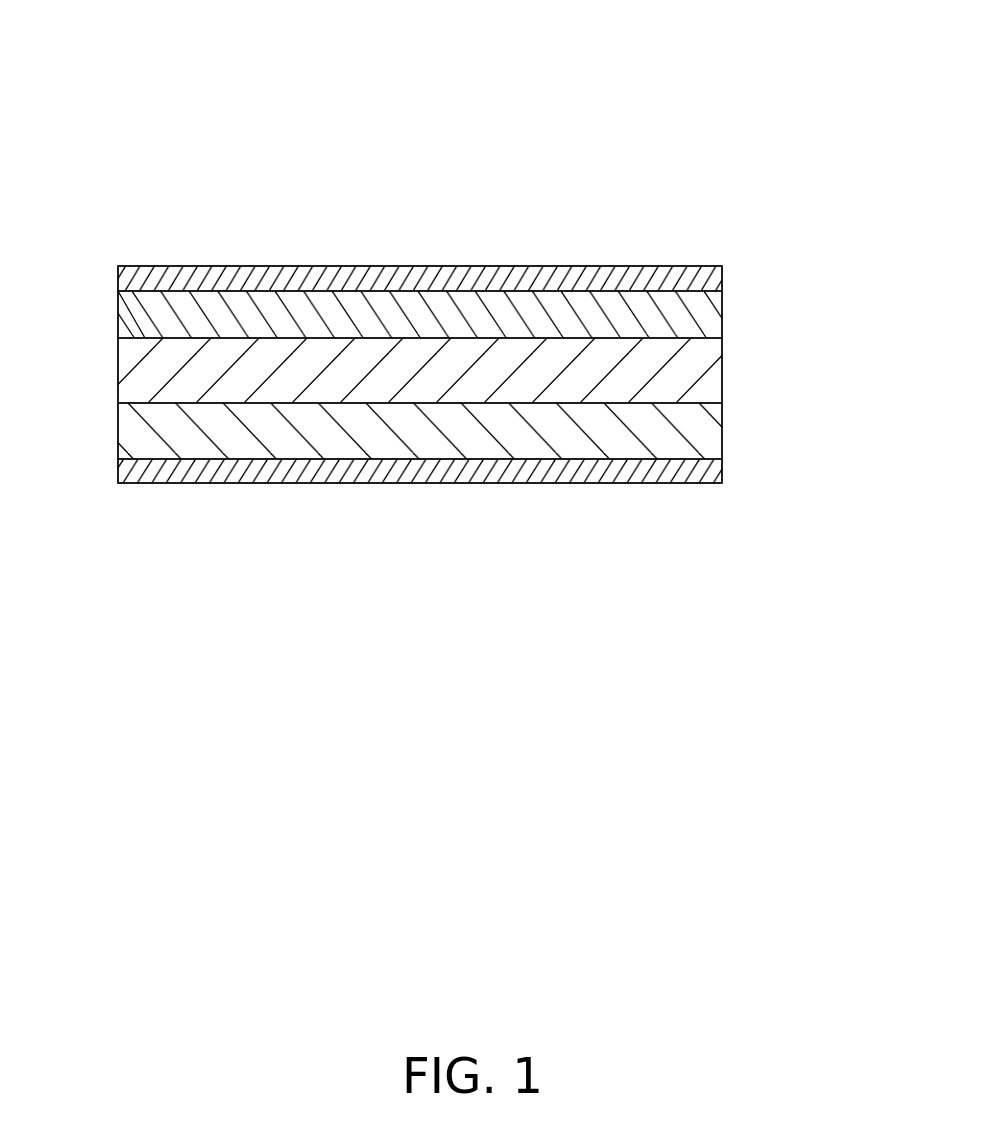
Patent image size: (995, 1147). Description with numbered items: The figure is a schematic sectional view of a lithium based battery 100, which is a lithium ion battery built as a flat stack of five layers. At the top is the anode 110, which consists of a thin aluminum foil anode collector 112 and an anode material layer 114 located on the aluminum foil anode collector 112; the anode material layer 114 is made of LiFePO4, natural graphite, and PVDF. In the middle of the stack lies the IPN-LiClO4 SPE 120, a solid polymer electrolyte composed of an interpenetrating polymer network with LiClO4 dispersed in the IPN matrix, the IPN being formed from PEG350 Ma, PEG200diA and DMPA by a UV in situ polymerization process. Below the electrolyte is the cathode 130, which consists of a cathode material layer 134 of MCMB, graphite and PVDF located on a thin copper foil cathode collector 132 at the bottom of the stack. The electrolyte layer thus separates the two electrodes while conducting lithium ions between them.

The lithium based battery 100 is at (406, 63).
The anode 110 is at (825, 218).
The aluminum foil anode collector 112 is at (700, 282).
The anode material layer 114 is at (697, 325).
The IPN-LiClO4 SPE 120 is at (147, 380).
The cathode 130 is at (827, 427).
The copper foil cathode collector 132 is at (695, 475).
The cathode material layer 134 is at (700, 435).